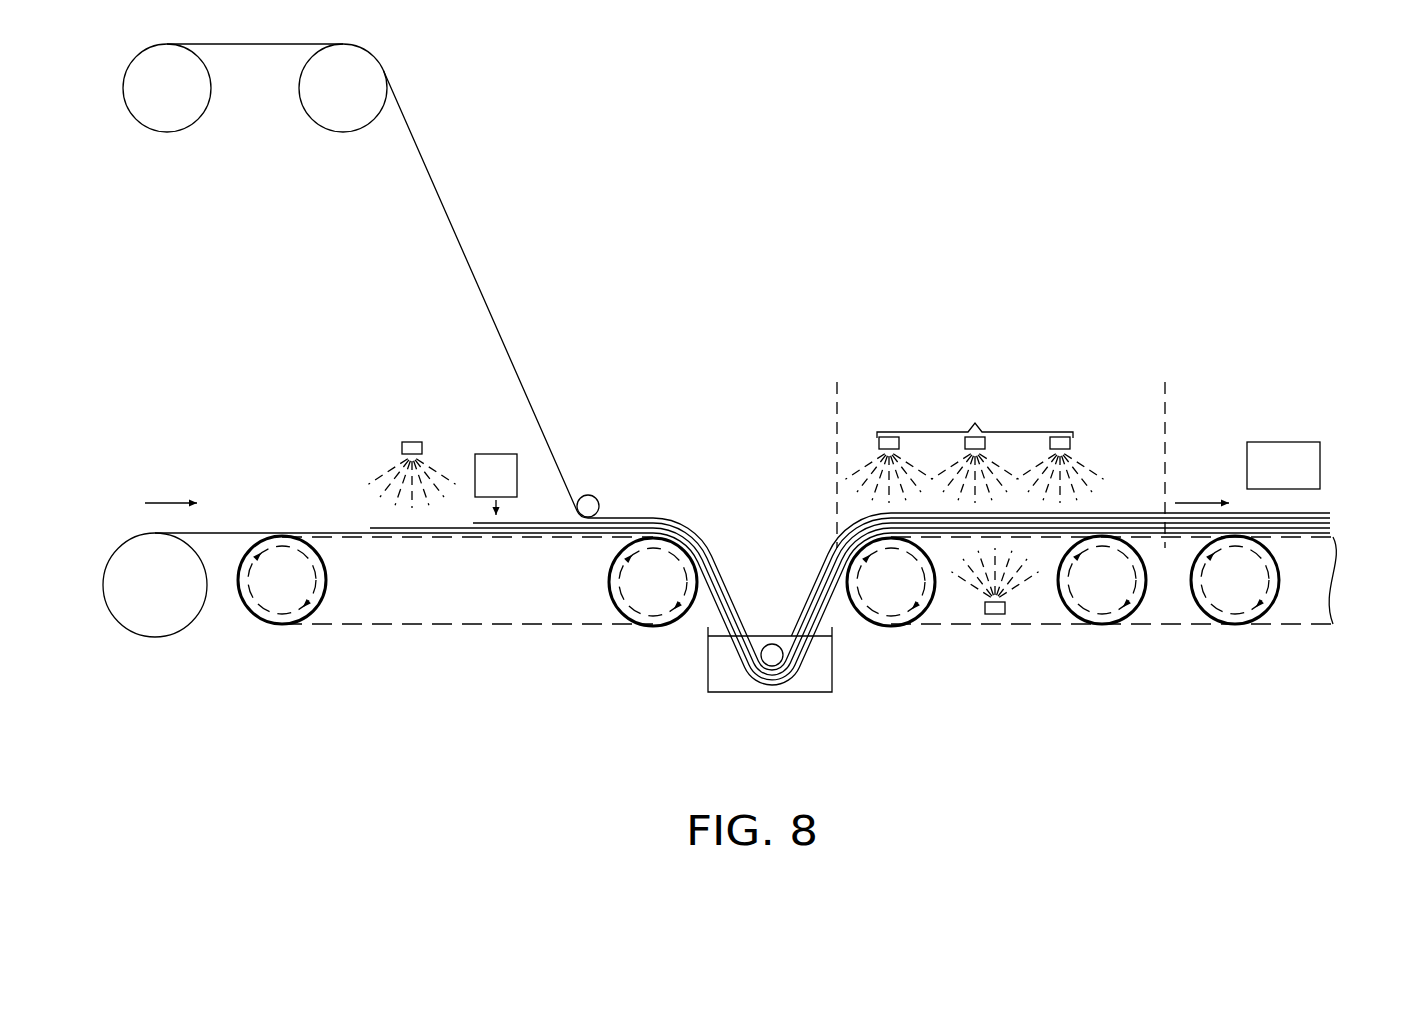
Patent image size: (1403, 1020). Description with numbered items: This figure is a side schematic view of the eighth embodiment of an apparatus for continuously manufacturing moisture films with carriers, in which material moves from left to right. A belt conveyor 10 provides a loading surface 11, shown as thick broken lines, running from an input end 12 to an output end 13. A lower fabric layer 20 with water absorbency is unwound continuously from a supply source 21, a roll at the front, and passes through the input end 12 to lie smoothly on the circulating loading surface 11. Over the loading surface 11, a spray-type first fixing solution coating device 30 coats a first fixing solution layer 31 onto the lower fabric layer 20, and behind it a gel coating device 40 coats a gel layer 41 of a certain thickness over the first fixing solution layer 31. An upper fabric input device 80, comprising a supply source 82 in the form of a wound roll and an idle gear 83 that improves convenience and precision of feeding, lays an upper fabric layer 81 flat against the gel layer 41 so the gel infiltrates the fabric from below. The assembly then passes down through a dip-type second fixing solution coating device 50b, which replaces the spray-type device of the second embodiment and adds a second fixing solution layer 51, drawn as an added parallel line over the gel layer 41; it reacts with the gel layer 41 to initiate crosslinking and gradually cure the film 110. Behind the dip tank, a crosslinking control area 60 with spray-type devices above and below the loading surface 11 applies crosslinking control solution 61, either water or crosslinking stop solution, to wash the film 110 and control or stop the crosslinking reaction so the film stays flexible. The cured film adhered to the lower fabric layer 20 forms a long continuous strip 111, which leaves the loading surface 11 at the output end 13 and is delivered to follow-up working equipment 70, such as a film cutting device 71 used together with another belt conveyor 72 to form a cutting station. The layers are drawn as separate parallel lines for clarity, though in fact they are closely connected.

The belt conveyor 10 is at (520, 622).
The loading surface 11 is at (460, 544).
The input end 12 is at (345, 545).
The output end 13 is at (582, 544).
The lower fabric layer 20 is at (238, 529).
The supply source 21 is at (151, 626).
The first fixing solution coating device 30 is at (411, 441).
The first fixing solution layer 31 is at (392, 470).
The gel coating device 40 is at (494, 458).
The gel layer 41 is at (516, 521).
The dip-type second fixing solution coating device 50b is at (752, 694).
The second fixing solution layer 51 is at (722, 680).
The crosslinking control area 60 is at (994, 563).
The crosslinking control solution 61 is at (1083, 461).
The follow-up working equipment 70 is at (1321, 439).
The film cutting device 71 is at (1310, 466).
The belt conveyor 72 is at (1318, 578).
The upper fabric input device 80 is at (356, 127).
The upper fabric layer 81 is at (607, 513).
The supply source 82 is at (165, 126).
The idle gear 83 is at (317, 133).
The film 110 is at (843, 399).
The long continuous strip 111 is at (1192, 375).